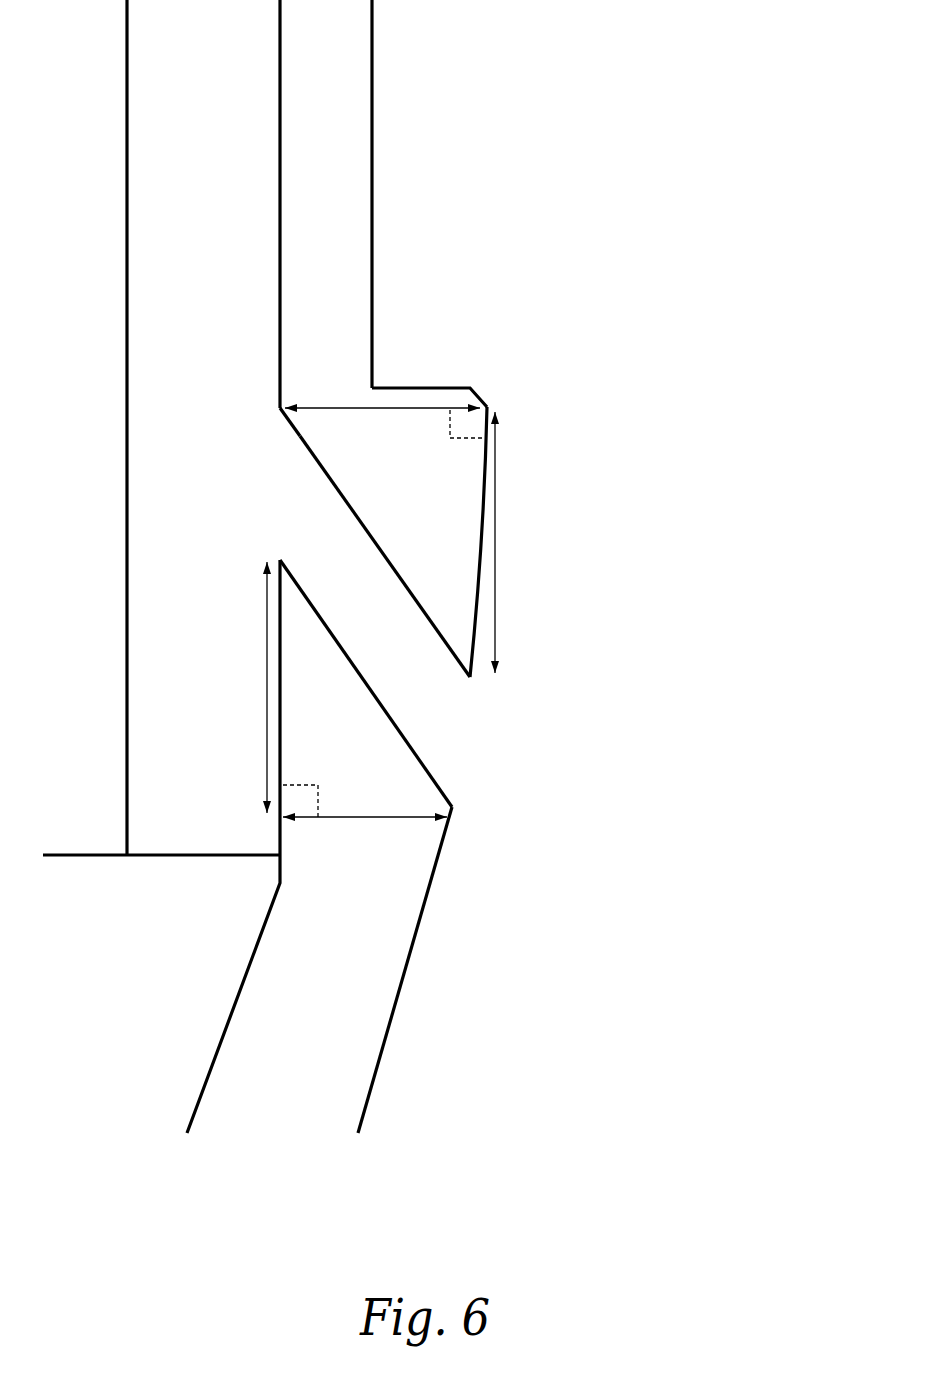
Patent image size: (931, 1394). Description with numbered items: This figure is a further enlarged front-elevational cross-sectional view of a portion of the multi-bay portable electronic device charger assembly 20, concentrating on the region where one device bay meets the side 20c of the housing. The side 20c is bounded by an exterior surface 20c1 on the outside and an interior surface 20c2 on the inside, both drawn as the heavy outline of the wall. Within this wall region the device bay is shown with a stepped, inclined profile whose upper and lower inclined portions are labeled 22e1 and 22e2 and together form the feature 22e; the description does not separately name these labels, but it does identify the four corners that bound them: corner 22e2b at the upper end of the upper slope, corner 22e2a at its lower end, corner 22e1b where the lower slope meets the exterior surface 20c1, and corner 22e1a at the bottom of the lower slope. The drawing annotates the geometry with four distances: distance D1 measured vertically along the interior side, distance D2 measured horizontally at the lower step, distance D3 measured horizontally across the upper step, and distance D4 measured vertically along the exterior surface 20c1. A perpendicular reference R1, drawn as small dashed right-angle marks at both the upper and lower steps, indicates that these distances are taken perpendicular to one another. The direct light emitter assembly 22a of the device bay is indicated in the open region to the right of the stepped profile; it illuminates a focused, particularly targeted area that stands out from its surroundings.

The multi-bay portable electronic device charger assembly 20 is at (572, 103).
The side 20c is at (392, 267).
The exterior surface 20c1 is at (490, 463).
The interior surface 20c2 is at (280, 192).
The direct light emitter assembly 22a is at (590, 740).
The projection 22e is at (362, 623).
The first inclined surface 22e1 is at (468, 740).
The corner 22e1a is at (452, 807).
The corner 22e1b is at (470, 677).
The second inclined surface 22e2 is at (280, 478).
The corner 22e2a is at (280, 560).
The corner 22e2b is at (280, 407).
The distance D1 is at (266, 698).
The distance D2 is at (368, 818).
The distance D3 is at (340, 407).
The distance D4 is at (495, 540).
The perpendicular reference R1 is at (450, 430).